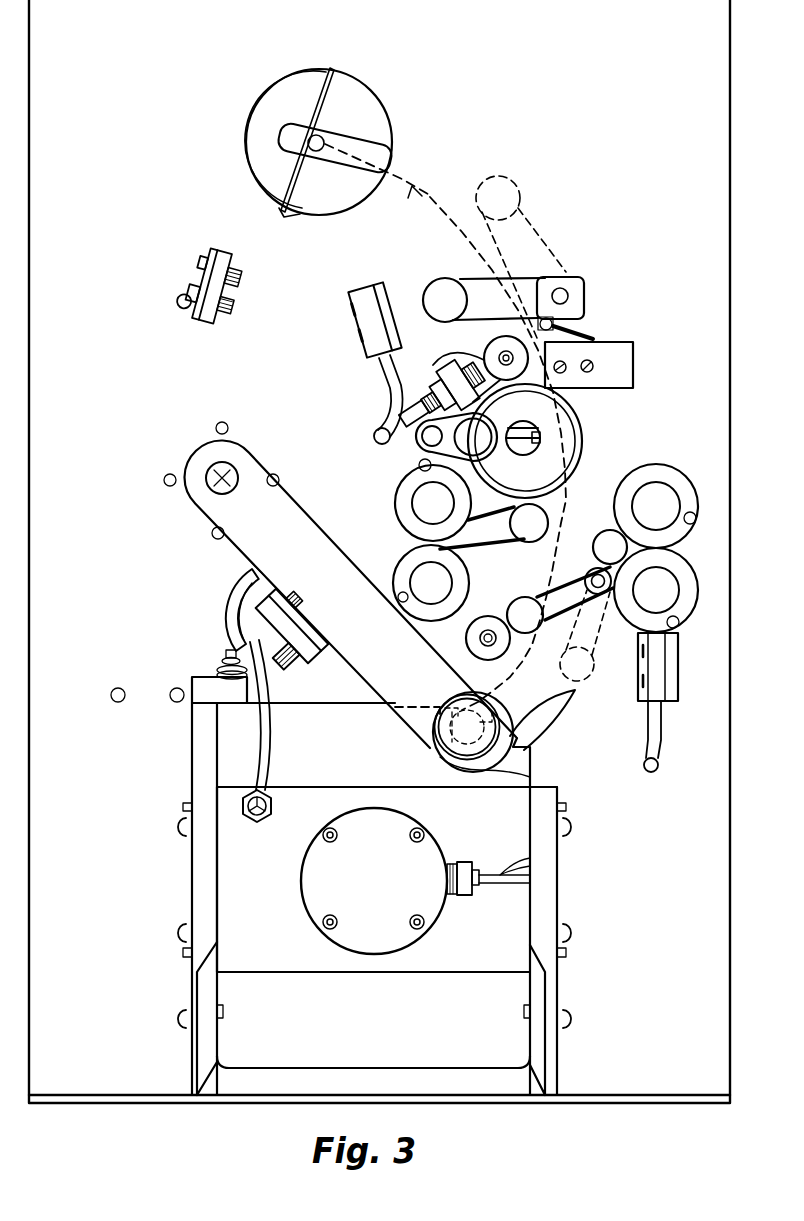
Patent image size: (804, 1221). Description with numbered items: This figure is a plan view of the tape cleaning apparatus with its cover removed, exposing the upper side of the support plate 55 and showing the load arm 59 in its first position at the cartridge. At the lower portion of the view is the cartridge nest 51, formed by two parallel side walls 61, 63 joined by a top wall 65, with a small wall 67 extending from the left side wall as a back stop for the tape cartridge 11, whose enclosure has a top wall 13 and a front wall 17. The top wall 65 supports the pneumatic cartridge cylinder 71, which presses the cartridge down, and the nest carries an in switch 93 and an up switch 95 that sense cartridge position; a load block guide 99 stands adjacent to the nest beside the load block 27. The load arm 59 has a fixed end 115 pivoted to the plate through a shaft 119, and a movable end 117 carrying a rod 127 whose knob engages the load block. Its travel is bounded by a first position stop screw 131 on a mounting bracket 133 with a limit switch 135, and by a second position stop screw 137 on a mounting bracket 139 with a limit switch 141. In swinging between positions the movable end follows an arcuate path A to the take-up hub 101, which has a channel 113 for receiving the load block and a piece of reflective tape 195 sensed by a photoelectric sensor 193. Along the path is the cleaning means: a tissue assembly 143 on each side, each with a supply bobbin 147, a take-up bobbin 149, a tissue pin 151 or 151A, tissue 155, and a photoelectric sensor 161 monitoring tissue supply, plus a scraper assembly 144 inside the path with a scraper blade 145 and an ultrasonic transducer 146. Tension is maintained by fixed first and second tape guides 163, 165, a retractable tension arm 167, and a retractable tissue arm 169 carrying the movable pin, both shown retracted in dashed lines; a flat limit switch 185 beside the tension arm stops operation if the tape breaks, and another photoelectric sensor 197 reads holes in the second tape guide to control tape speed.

The tape cartridge 11 is at (222, 1040).
The top wall 13 is at (517, 994).
The front wall 17 is at (340, 703).
The load block 27 is at (517, 734).
The cartridge nest 51 is at (582, 858).
The support plate 55 is at (725, 165).
The load arm 59 is at (193, 500).
The left side wall 61 is at (192, 872).
The right side wall 63 is at (548, 912).
The top wall 65 is at (222, 818).
The small wall 67 is at (192, 680).
The pneumatic cartridge cylinder 71 is at (311, 890).
The in switch 93 is at (220, 660).
The up switch 95 is at (245, 800).
The load block guide 99 is at (565, 710).
The take-up hub 101 is at (270, 88).
The channel 113 is at (388, 160).
The fixed end 115 is at (246, 455).
The movable end 117 is at (530, 777).
The shaft 119 is at (213, 470).
The load arm rod 127 is at (450, 745).
The first position stop screw 131 is at (316, 622).
The mounting bracket 133 is at (238, 600).
The limit switch 135 is at (292, 600).
The second position stop screw 137 is at (243, 276).
The mounting bracket 139 is at (207, 272).
The limit switch 141 is at (233, 312).
The tissue assembly 143 is at (697, 552).
The scraper assembly 144 is at (528, 426).
The scraper blade 145 is at (542, 437).
The ultrasonic transducer 146 is at (571, 455).
The supply bobbin 147 is at (415, 602).
The take-up bobbin 149 is at (396, 498).
The tissue pin 151 is at (548, 511).
The tissue pin 151A is at (507, 608).
The tissue 155 is at (535, 594).
The photoelectric sensor 161 is at (660, 668).
The first tape guide 163 is at (466, 642).
The second tape guide 165 is at (496, 346).
The tension arm 167 is at (517, 278).
The tissue arm 169 is at (553, 622).
The limit switch 185 is at (634, 350).
The photoelectric sensor 193 is at (356, 325).
The reflective tape 195 is at (284, 222).
The photoelectric sensor 197 is at (447, 366).
The arcuate path A is at (414, 188).